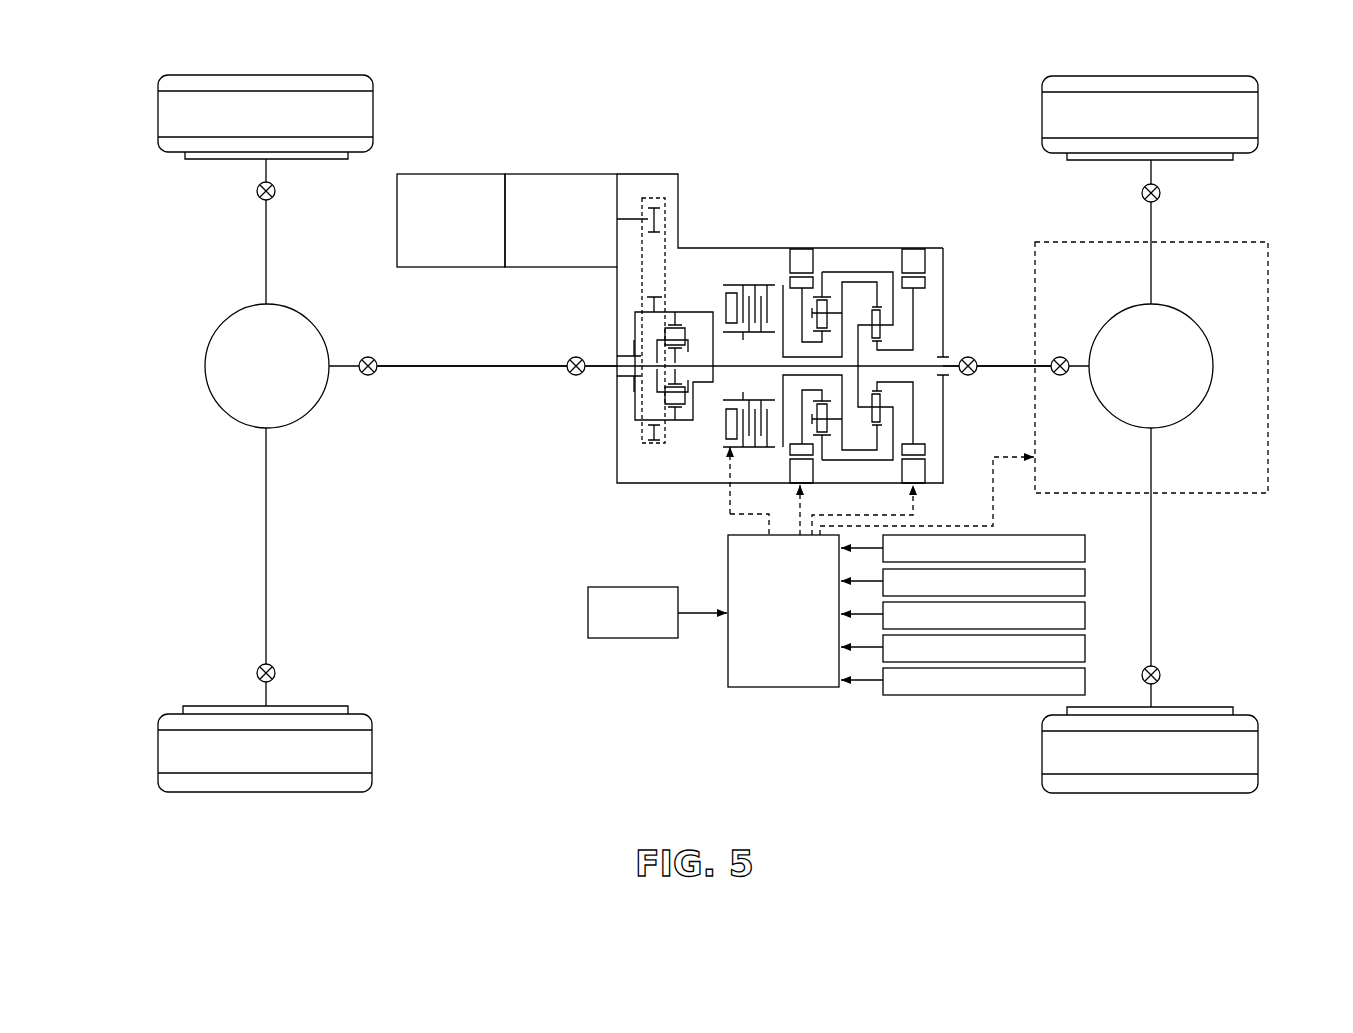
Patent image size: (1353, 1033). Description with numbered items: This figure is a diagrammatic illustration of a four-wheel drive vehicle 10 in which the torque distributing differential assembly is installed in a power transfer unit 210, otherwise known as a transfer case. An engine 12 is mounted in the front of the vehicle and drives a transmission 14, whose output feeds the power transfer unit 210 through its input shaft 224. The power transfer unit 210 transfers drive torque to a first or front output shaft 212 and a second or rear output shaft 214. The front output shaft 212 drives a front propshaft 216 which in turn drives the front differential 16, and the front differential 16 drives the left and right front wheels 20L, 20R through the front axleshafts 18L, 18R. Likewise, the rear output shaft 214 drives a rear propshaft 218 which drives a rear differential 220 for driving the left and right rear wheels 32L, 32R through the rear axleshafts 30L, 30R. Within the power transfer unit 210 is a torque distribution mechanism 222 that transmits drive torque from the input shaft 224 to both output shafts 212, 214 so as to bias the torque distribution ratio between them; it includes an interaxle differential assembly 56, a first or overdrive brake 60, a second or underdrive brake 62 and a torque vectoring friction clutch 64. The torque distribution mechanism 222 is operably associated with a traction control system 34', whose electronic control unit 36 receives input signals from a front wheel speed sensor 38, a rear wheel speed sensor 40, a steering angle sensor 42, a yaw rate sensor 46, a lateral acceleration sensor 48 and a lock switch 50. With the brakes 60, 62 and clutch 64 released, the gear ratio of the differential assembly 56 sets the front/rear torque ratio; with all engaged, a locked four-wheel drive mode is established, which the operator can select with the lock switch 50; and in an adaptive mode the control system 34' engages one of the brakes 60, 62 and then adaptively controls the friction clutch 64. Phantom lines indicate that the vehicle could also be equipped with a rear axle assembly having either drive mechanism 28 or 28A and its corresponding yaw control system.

The all-wheel drive vehicle 10 is at (497, 426).
The engine 12 is at (474, 185).
The transmission 14 is at (567, 185).
The front differential 16 is at (222, 359).
The right front axleshaft 18R is at (267, 222).
The left front axleshaft 18L is at (267, 550).
The right front wheel 20R is at (358, 113).
The left front wheel 20L is at (357, 755).
The drive mechanism 28 is at (1165, 337).
The drive mechanism 28A is at (1268, 241).
The right rear axleshaft 30R is at (1150, 222).
The left rear axleshaft 30L is at (1160, 594).
The right rear wheel 32R is at (1243, 113).
The left rear wheel 32L is at (1243, 755).
The traction control system 34' is at (862, 591).
The electronic control unit 36 is at (753, 674).
The front wheel speed sensor 38 is at (1073, 551).
The rear wheel speed sensor 40 is at (1073, 585).
The steering angle sensor 42 is at (1073, 618).
The yaw rate sensor 46 is at (1073, 651).
The lateral acceleration sensor 48 is at (1073, 684).
The lock switch 50 is at (598, 597).
The differential assembly 56 is at (657, 394).
The first brake 60 is at (816, 265).
The second brake 62 is at (934, 270).
The torque vectoring friction clutch 64 is at (737, 284).
The power transfer unit 210 is at (931, 192).
The first output shaft 212 is at (594, 364).
The second output shaft 214 is at (916, 365).
The front propshaft 216 is at (452, 363).
The rear propshaft 218 is at (996, 371).
The rear differential 220 is at (1200, 380).
The torque distribution mechanism 222 is at (891, 248).
The input shaft 224 is at (630, 218).